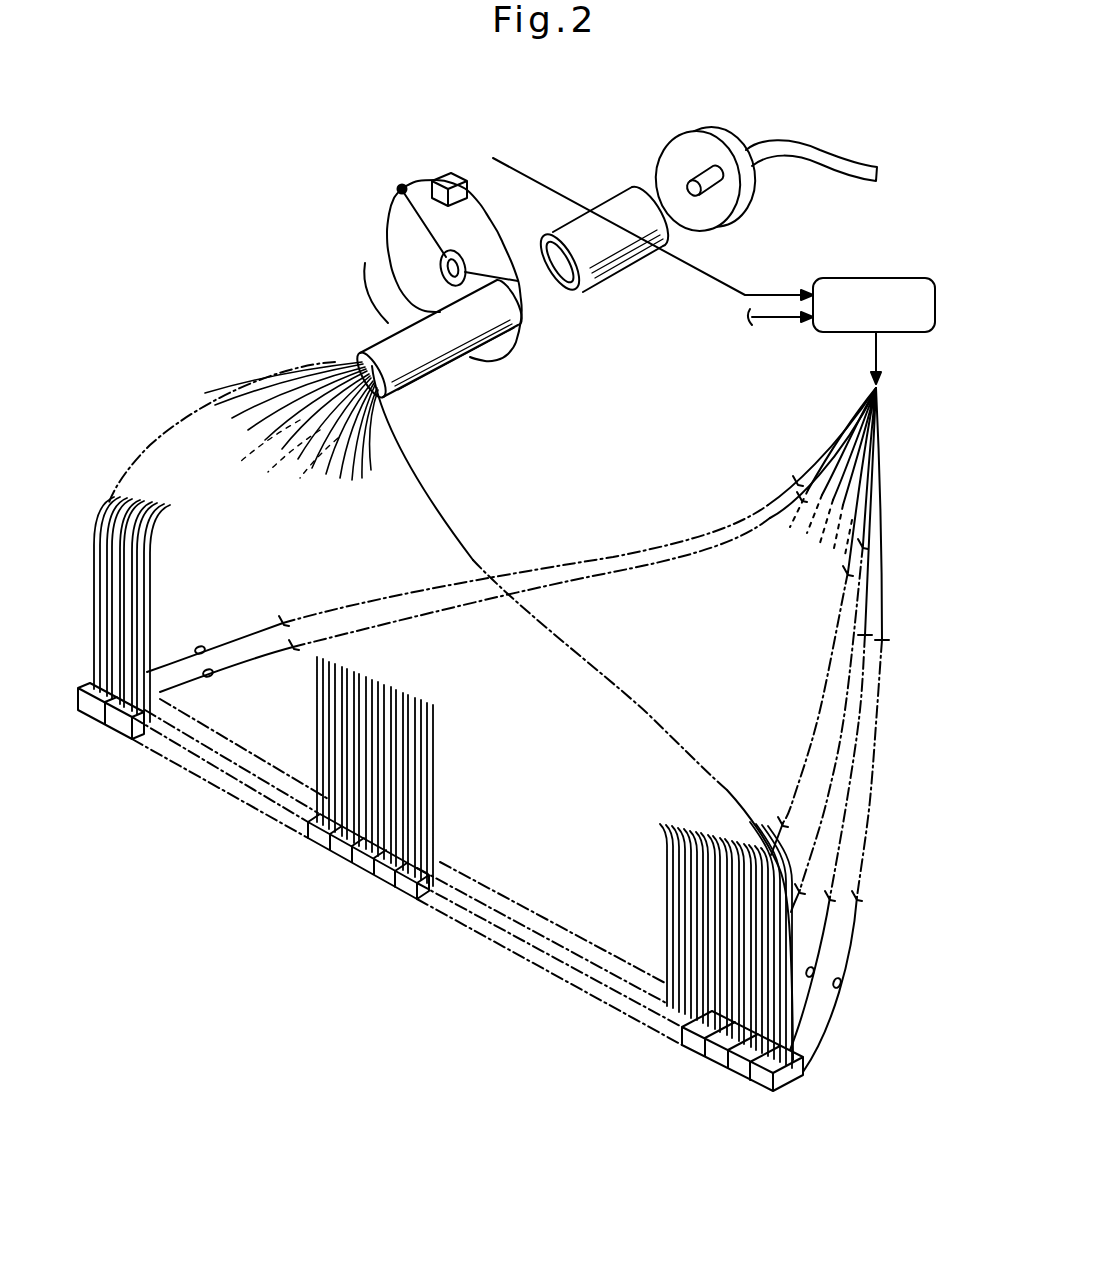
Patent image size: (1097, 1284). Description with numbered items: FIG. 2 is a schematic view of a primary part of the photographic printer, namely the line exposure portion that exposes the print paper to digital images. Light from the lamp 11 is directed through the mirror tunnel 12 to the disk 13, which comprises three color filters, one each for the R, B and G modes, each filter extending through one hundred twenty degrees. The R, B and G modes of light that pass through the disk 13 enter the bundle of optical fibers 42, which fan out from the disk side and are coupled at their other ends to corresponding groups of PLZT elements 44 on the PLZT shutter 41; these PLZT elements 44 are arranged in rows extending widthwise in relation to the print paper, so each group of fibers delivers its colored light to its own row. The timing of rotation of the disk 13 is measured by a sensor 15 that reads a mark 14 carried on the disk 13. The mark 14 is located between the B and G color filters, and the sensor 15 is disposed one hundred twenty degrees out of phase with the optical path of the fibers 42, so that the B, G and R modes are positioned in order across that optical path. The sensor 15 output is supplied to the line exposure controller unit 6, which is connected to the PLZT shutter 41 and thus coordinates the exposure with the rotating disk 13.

The line exposure controller unit 6 is at (885, 279).
The lamp 11 is at (748, 215).
The mirror tunnel 12 is at (610, 275).
The disk 13 is at (384, 226).
The mark 14 is at (397, 189).
The sensor 15 is at (453, 175).
The PLZT shutter 41 is at (434, 936).
The optical fibers 42 is at (450, 367).
The PLZT elements 44 is at (377, 877).